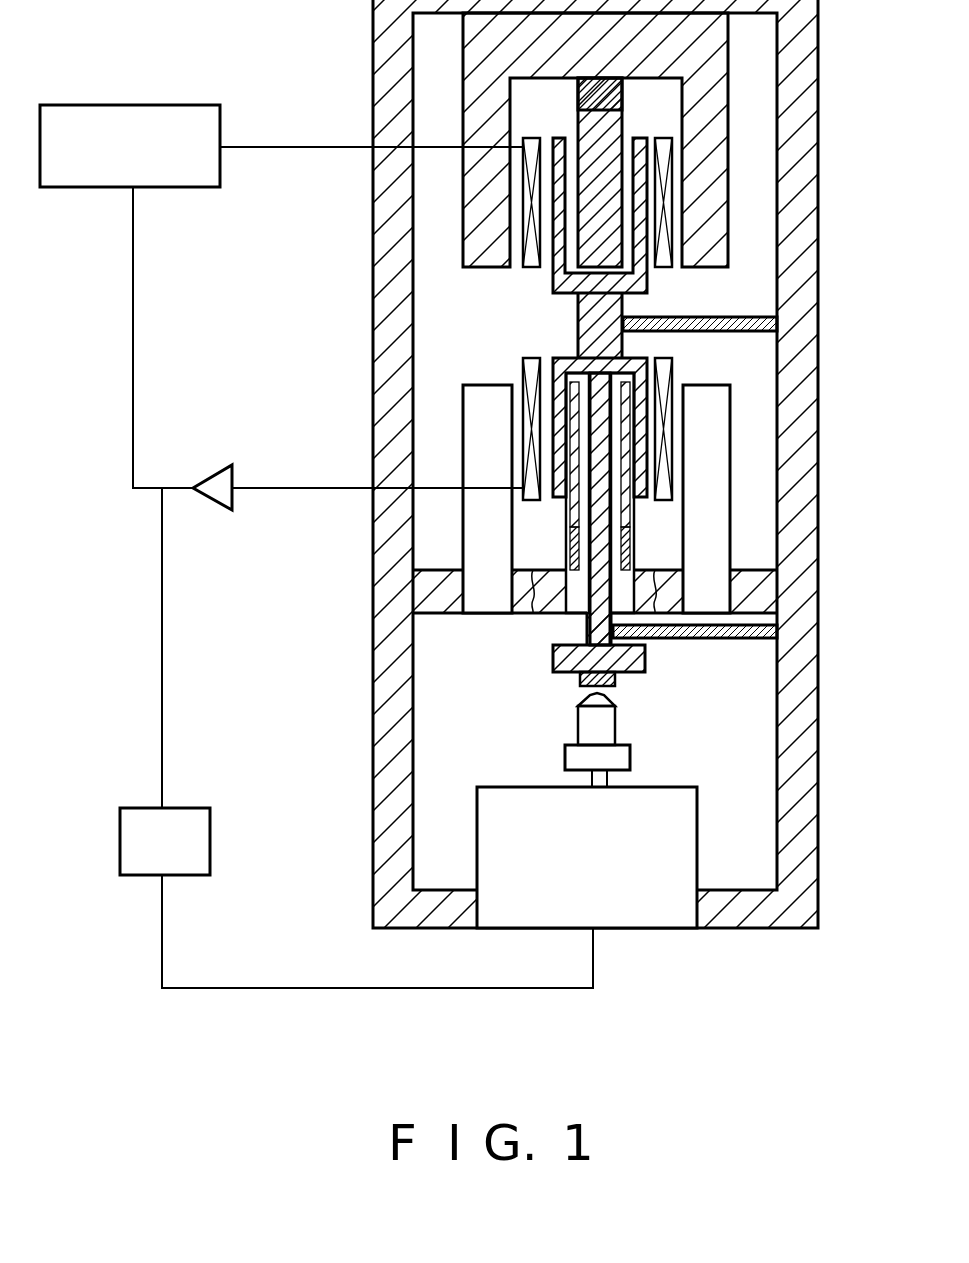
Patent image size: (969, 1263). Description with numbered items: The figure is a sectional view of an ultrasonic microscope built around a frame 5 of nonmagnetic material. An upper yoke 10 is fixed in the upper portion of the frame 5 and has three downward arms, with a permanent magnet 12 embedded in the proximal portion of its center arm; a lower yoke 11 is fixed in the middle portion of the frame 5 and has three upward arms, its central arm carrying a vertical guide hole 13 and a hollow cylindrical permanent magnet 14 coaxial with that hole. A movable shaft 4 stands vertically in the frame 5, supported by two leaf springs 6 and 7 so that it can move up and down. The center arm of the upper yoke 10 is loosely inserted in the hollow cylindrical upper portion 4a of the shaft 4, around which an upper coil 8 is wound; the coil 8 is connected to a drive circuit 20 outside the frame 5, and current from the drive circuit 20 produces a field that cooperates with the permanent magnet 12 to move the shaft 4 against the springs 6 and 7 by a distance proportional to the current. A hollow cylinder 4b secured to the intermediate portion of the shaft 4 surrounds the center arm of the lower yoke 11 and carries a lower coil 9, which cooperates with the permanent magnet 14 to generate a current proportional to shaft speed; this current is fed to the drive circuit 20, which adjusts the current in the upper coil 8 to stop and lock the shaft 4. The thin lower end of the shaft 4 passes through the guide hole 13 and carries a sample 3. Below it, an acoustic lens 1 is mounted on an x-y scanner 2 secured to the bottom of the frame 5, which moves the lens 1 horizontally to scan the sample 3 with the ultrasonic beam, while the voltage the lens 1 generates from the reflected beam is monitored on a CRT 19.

The acoustic lens 1 is at (617, 705).
The x-y scanner 2 is at (655, 905).
The sample 3 is at (575, 683).
The movable shaft 4 is at (585, 620).
The upper portion 4a is at (572, 140).
The hollow cylinder 4b is at (632, 355).
The frame 5 is at (818, 12).
The leaf spring 6 is at (725, 317).
The leaf spring 7 is at (745, 638).
The upper coil 8 is at (530, 268).
The lower coil 9 is at (530, 357).
The upper yoke 10 is at (720, 155).
The lower yoke 11 is at (720, 415).
The permanent magnet 12 is at (624, 92).
The vertical guide hole 13 is at (580, 552).
The hollow cylindrical permanent magnet 14 is at (627, 543).
The CRT 19 is at (140, 808).
The drive circuit 20 is at (130, 146).